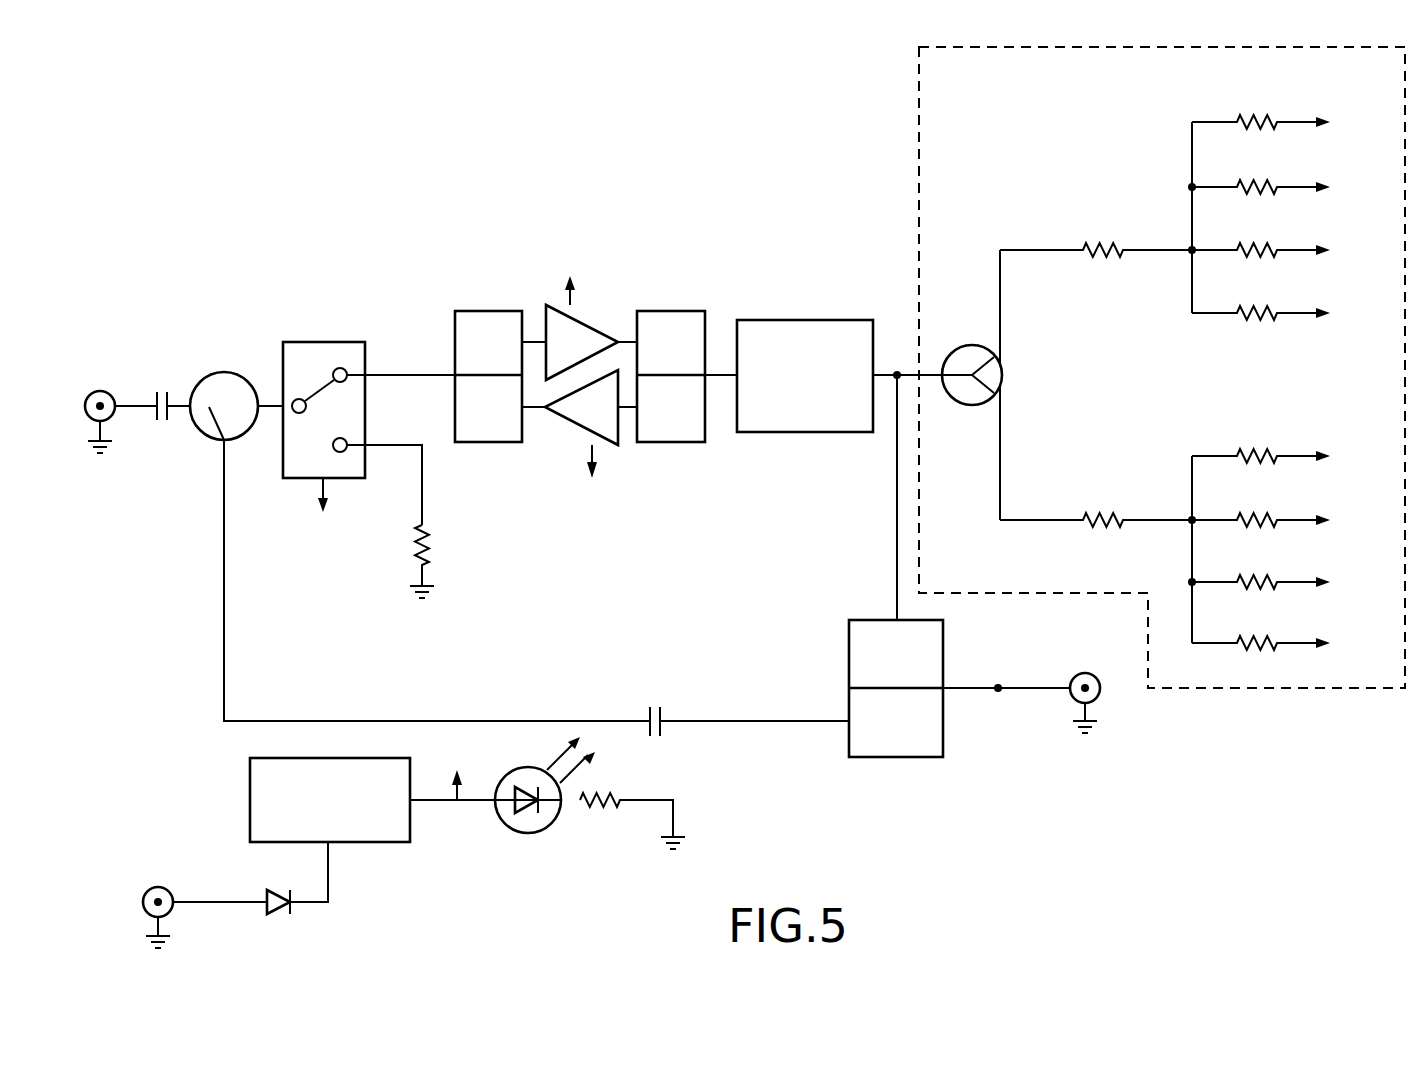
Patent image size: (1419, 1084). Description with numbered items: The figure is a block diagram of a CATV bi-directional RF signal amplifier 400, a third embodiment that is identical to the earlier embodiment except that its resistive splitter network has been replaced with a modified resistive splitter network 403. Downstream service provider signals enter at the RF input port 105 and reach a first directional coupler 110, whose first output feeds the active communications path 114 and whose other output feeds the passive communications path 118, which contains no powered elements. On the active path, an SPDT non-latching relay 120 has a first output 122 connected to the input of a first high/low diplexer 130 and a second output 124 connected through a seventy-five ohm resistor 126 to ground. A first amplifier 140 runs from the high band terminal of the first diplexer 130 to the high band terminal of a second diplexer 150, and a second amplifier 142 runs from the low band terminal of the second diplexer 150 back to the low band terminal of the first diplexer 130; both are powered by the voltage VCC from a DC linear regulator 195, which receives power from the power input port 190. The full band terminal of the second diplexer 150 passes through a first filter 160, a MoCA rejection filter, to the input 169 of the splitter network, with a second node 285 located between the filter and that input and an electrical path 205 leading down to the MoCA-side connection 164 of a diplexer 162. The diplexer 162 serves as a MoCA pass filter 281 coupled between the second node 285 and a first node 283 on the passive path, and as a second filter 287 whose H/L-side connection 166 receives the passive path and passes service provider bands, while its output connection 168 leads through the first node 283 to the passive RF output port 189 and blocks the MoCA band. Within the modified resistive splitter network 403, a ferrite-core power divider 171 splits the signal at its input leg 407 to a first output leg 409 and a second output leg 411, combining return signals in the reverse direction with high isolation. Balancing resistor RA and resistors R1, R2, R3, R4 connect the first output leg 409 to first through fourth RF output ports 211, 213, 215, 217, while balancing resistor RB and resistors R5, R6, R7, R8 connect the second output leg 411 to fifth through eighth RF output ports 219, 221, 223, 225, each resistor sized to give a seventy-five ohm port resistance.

The CATV bi-directional RF signal amplifier 400 is at (316, 212).
The RF input port 105 is at (112, 413).
The first directional coupler 110 is at (219, 359).
The relay 120 is at (324, 414).
The first output of the relay 122 is at (401, 359).
The second output of the relay 124 is at (384, 485).
The resistor 126 is at (436, 561).
The first high/low diplexer 130 is at (496, 345).
The first amplifier 140 is at (591, 314).
The second amplifier 142 is at (591, 437).
The second diplexer 150 is at (692, 345).
The first filter 160 is at (785, 318).
The active communications path 114 is at (643, 557).
The passive communications path 118 is at (437, 580).
The input of the resistive splitter network 169 is at (897, 371).
The second node 285 is at (893, 392).
The electrical path 205 is at (897, 515).
The MoCA diplexer input 164 is at (875, 606).
The MoCA diplexer H/L input 166 is at (749, 714).
The MoCA diplexer output 168 is at (1006, 673).
The diplexer 162 is at (848, 716).
The MoCA pass filter 281 is at (849, 640).
The second filter 287 is at (849, 740).
The first node 283 is at (998, 692).
The passive RF output port 189 is at (1085, 687).
The power divider 171 is at (969, 406).
The input leg 407 is at (936, 372).
The first output leg 409 is at (1000, 303).
The second output leg 411 is at (1000, 437).
The modified resistive splitter network 403 is at (919, 92).
The resistor RA is at (1107, 240).
The resistor RB is at (1107, 508).
The resistor R1 is at (1259, 112).
The resistor R2 is at (1259, 175).
The resistor R3 is at (1259, 238).
The resistor R4 is at (1259, 301).
The resistor R5 is at (1259, 449).
The resistor R6 is at (1259, 512).
The resistor R7 is at (1259, 574).
The resistor R8 is at (1259, 636).
The first RF output port 211 is at (1321, 112).
The second RF output port 213 is at (1320, 186).
The third RF output port 215 is at (1320, 249).
The fourth RF output port 217 is at (1320, 311).
The fifth RF output port 219 is at (1320, 457).
The sixth RF output port 221 is at (1320, 521).
The seventh RF output port 223 is at (1320, 583).
The eighth RF output port 225 is at (1320, 644).
The DC linear regulator 195 is at (250, 783).
The power input port 190 is at (170, 910).